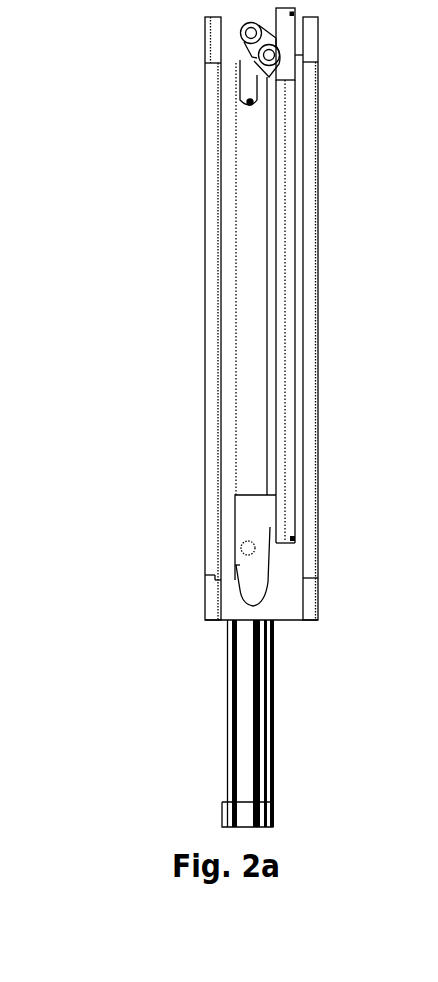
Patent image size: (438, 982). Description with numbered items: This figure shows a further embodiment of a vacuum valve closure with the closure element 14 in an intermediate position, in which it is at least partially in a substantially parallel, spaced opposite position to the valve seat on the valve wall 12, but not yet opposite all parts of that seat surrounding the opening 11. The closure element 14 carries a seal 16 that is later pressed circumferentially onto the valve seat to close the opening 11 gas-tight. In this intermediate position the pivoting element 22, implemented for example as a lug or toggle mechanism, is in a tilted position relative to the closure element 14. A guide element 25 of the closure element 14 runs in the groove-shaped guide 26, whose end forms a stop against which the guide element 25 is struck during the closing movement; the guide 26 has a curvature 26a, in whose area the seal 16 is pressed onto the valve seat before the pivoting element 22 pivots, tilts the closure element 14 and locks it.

The opening 11 is at (313, 332).
The valve wall 12 is at (313, 597).
The closure element 14 is at (287, 242).
The seal 16 is at (292, 540).
The pivoting element 22 is at (262, 56).
The guide element 25 is at (250, 527).
The guide 26 is at (250, 230).
The curvature 26a is at (248, 583).